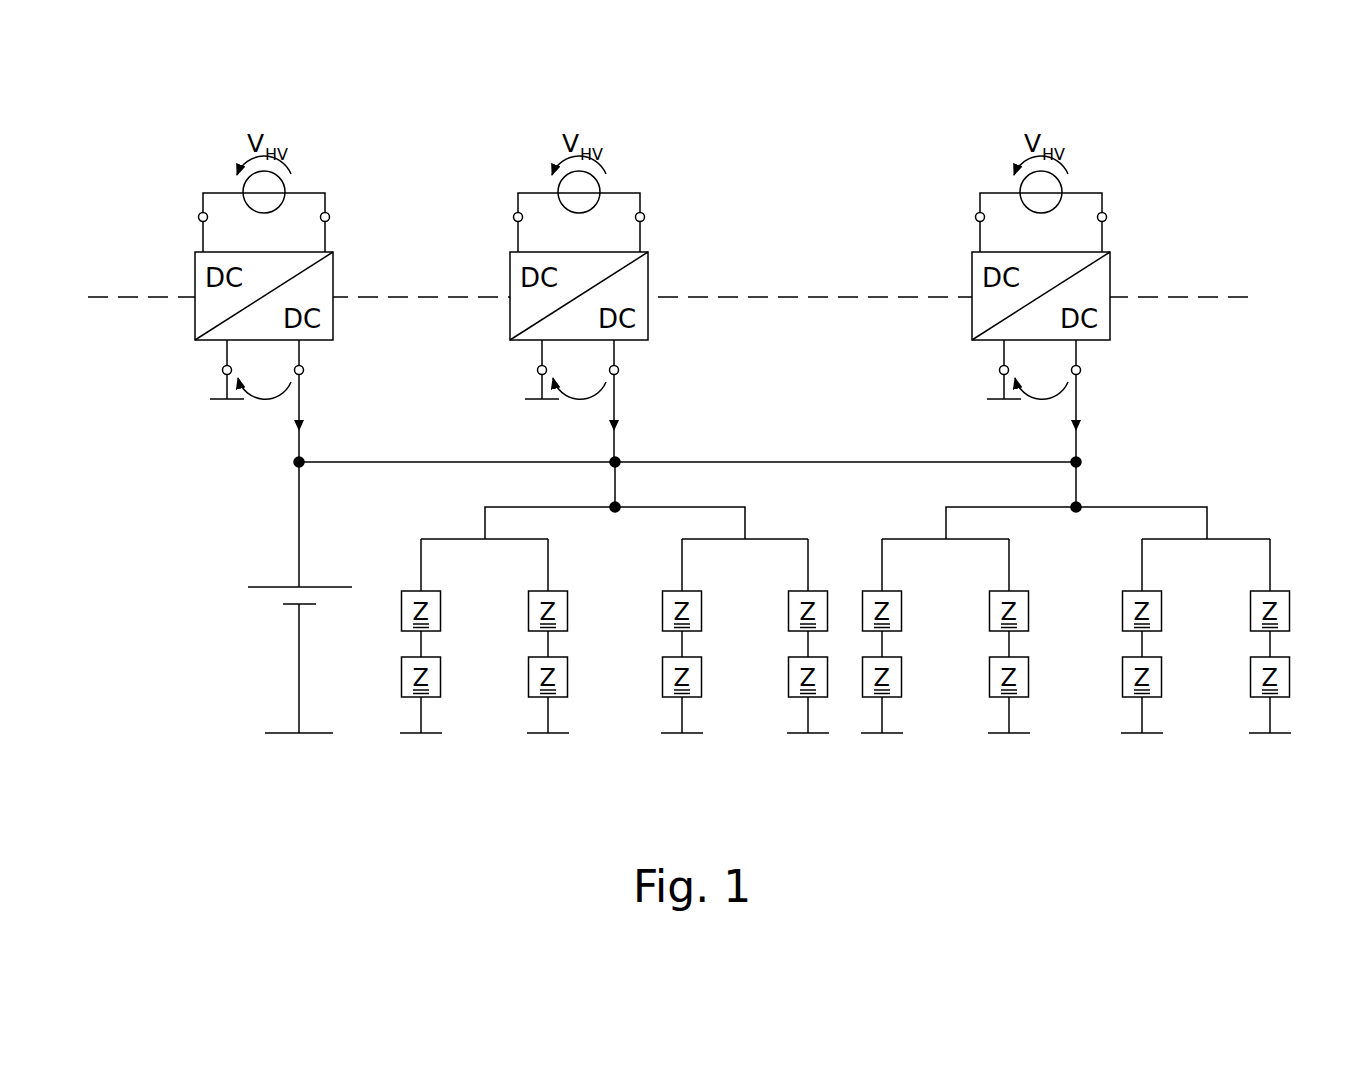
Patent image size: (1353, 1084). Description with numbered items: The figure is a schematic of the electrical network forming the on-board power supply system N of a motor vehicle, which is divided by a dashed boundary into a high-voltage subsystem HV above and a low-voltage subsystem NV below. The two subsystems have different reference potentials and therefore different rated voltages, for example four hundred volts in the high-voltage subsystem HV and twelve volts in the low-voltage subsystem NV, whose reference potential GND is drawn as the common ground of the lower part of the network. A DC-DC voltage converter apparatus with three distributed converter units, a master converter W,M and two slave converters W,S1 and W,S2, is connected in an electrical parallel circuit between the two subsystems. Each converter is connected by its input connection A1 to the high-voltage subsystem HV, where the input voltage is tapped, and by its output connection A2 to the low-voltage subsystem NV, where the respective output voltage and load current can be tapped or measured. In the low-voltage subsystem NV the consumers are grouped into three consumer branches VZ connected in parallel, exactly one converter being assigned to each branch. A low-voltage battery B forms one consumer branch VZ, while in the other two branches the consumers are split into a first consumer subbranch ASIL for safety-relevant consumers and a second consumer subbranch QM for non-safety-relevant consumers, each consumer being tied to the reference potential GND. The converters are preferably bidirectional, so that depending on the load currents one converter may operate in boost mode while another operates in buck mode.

The high-voltage subsystem HV is at (1178, 160).
The low-voltage subsystem NV is at (1219, 350).
The master converter of the DC-DC voltage converter apparatus W,M is at (194, 272).
The first slave converter of the DC-DC voltage converter apparatus W,S1 is at (509, 278).
The second slave converter of the DC-DC voltage converter apparatus W,S2 is at (971, 278).
The input connection A1 is at (351, 214).
The output connection A2 is at (326, 368).
The consumer branch VZ is at (308, 510).
The first consumer subbranch ASIL is at (446, 537).
The second consumer subbranch QM is at (784, 530).
The low-voltage battery B is at (259, 604).
The reference potential of the low-voltage subsystem GND is at (214, 420).
The on-board power supply system N is at (213, 786).